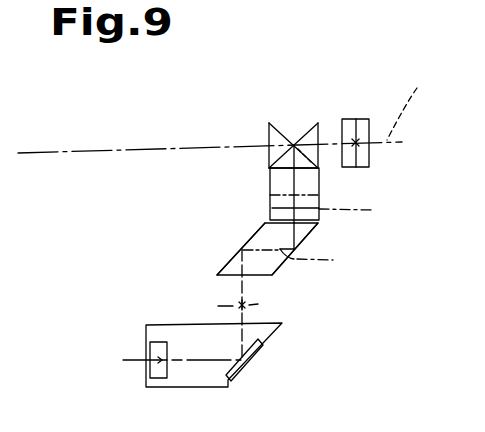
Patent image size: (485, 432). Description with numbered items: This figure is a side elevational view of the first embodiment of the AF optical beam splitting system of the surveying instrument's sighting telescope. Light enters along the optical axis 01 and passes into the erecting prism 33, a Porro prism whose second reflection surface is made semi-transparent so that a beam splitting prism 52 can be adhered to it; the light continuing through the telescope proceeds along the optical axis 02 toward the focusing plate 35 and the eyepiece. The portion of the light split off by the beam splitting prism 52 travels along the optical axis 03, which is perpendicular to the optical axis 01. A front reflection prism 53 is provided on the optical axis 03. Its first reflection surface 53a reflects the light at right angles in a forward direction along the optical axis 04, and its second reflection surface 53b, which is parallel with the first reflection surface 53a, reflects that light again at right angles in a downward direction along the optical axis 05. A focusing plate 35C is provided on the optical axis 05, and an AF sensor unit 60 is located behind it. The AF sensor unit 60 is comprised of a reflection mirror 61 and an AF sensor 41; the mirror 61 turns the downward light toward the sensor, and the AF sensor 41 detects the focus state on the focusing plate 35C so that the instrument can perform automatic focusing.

The optical axis 01 is at (145, 148).
The optical axis 02 is at (409, 99).
The optical axis 03 is at (361, 208).
The optical axis 04 is at (330, 267).
The optical axis 05 is at (240, 287).
The erecting prism (Porro prism) 33 is at (291, 110).
The focusing plate 35 is at (356, 119).
The focusing plate 35C is at (260, 303).
The AF sensor 41 is at (148, 350).
The beam splitting prism 52 is at (282, 208).
The front reflection prism 53 is at (267, 238).
The first reflection surface 53a is at (310, 235).
The second reflection surface 53b is at (228, 263).
The AF sensor unit 60 is at (203, 388).
The reflection mirror 61 is at (258, 358).